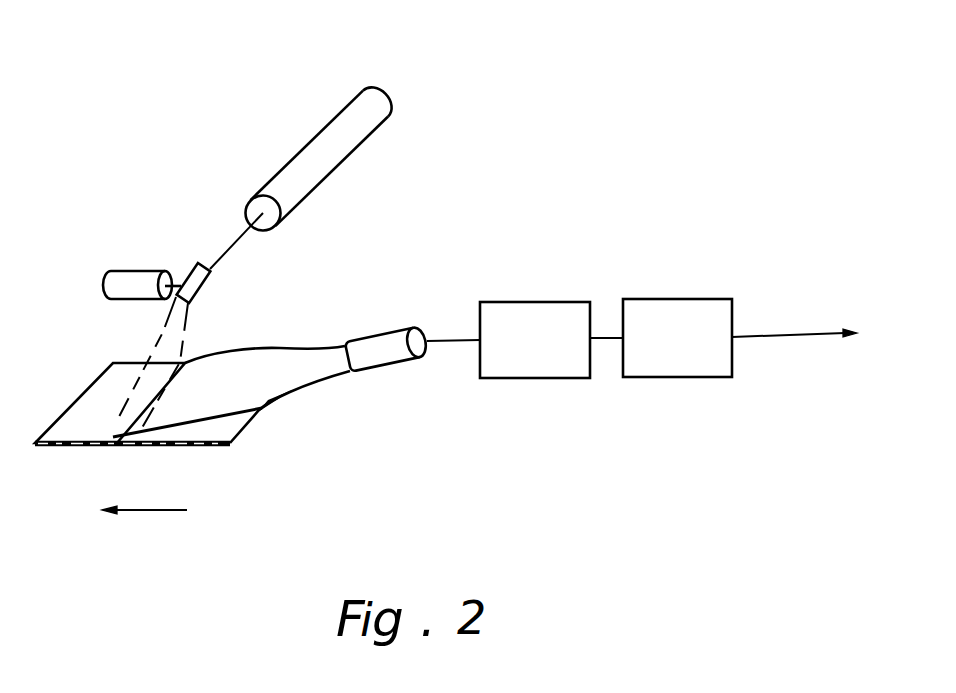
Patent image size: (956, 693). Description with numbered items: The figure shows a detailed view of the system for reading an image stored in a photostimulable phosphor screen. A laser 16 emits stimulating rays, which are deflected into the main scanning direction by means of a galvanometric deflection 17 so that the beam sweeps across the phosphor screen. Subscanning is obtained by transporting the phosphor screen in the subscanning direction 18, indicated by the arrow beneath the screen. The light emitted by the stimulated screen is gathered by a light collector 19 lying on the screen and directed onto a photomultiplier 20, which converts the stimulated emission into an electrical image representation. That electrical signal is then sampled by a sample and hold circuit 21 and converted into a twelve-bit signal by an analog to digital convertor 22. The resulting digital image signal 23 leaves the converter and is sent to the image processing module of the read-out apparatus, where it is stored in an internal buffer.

The laser 16 is at (345, 106).
The galvanometric deflection 17 is at (197, 268).
The subscanning direction 18 is at (82, 447).
The light collector 19 is at (277, 352).
The photomultiplier 20 is at (385, 332).
The sample and hold circuit 21 is at (542, 300).
The analog to digital convertor 22 is at (685, 300).
The digital image signal 23 is at (803, 328).